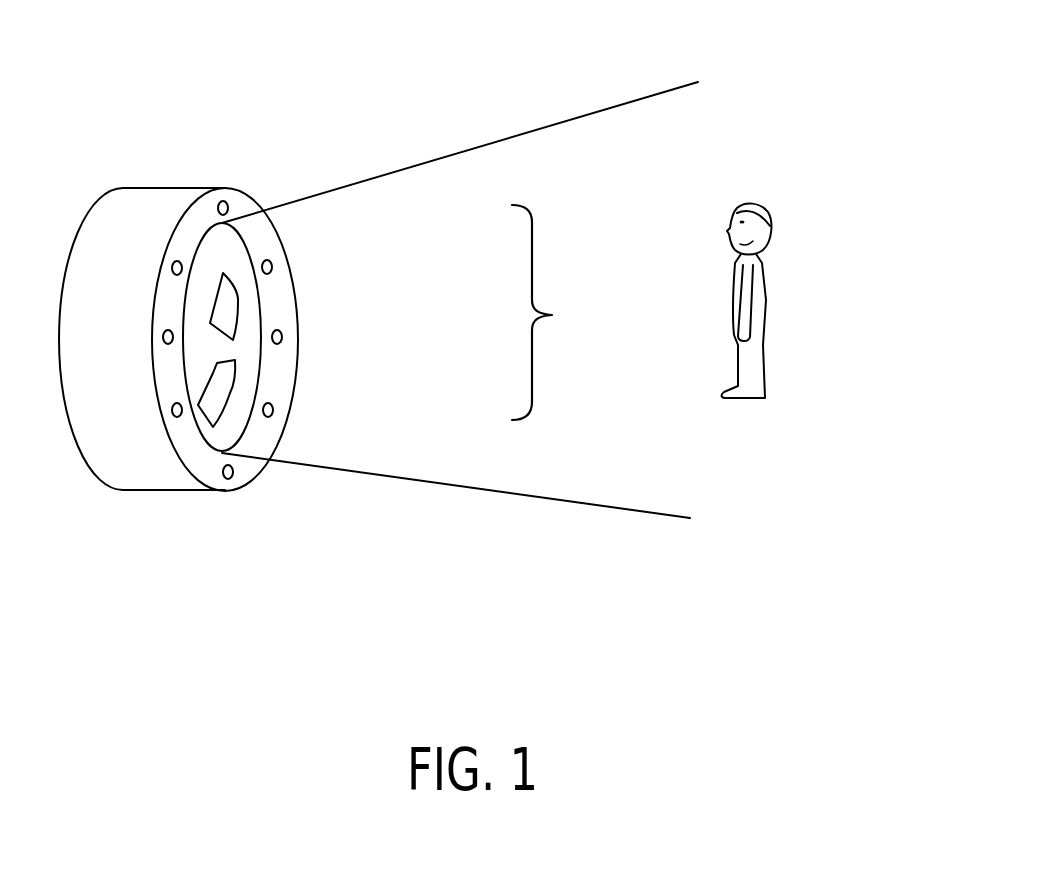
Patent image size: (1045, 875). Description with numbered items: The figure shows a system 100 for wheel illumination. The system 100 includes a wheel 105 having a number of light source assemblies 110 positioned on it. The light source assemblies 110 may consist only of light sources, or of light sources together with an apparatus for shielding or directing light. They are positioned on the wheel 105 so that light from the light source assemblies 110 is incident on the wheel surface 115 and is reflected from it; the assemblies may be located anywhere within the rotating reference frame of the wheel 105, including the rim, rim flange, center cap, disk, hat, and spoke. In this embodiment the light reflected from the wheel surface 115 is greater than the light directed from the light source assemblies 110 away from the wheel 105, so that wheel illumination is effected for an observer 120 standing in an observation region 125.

The system 100 is at (223, 320).
The wheel 105 is at (173, 500).
The light source assemblies 110 is at (265, 262).
The wheel surface 115 is at (245, 353).
The observer 120 is at (753, 200).
The observation region 125 is at (552, 312).